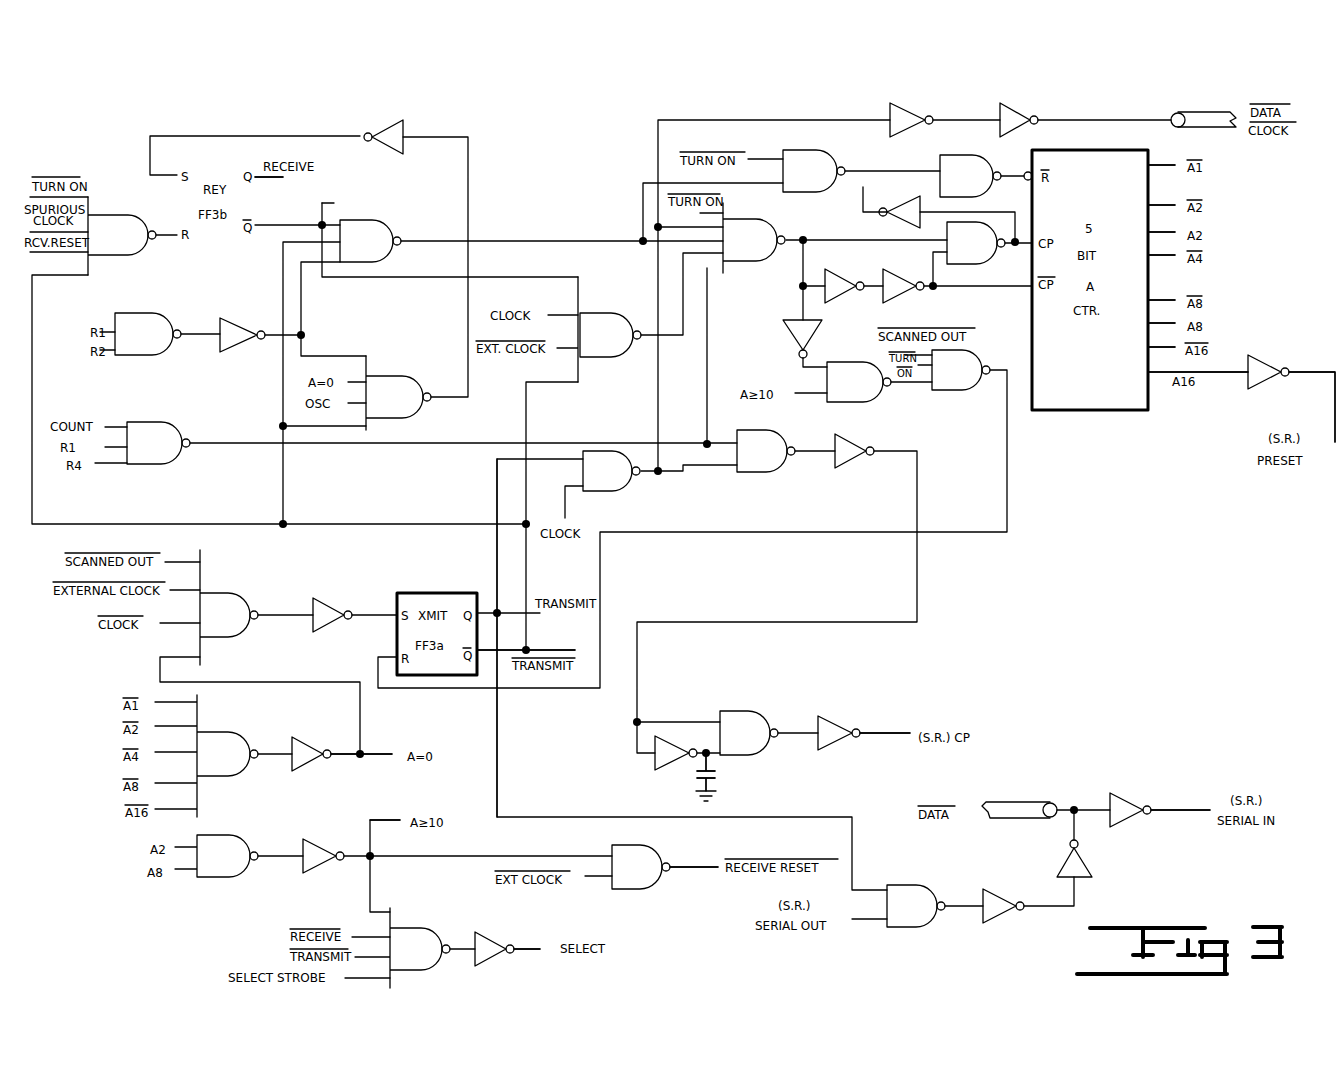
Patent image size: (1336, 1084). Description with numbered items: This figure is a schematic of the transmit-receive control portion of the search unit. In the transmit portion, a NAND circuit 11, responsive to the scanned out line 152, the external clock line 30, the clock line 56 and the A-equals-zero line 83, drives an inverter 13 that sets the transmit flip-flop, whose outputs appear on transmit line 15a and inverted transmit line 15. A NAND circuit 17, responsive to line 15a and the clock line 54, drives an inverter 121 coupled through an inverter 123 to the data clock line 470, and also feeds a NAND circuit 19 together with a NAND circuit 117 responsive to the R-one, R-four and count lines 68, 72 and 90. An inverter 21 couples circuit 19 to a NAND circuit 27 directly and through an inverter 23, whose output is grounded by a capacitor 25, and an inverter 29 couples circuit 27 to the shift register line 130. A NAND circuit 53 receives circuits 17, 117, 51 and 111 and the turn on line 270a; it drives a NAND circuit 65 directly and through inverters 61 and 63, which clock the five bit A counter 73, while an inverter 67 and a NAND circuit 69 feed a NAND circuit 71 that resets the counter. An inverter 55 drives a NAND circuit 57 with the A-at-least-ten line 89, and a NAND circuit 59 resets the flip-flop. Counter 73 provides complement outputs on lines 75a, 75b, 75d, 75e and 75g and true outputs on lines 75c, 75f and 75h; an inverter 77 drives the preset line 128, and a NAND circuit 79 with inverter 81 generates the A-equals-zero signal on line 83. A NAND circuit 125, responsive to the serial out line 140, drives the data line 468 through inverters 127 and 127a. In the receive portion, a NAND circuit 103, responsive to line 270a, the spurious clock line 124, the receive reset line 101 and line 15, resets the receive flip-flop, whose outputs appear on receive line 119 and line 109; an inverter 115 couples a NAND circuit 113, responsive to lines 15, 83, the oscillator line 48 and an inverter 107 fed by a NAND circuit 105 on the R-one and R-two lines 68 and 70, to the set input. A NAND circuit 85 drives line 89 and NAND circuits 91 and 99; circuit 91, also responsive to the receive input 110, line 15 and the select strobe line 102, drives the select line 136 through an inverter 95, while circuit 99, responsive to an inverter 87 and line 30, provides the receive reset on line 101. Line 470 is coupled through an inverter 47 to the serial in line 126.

The NAND circuit 11 is at (250, 595).
The inverter 13 is at (330, 600).
The transmit line 15 is at (528, 650).
The transmit line 15a is at (497, 560).
The NAND circuit 17 is at (605, 451).
The NAND circuit 19 is at (775, 430).
The inverter 21 is at (855, 440).
The inverter 23 is at (668, 770).
The capacitor 25 is at (715, 778).
The NAND circuit 27 is at (752, 711).
The inverter 29 is at (838, 718).
The external clock line 30 is at (565, 350).
The inverter 47 is at (1130, 800).
The oscillator line 48 is at (360, 405).
The NAND circuit 51 is at (605, 313).
The NAND circuit 53 is at (760, 262).
The clock line 54 is at (570, 315).
The inverter 55 is at (815, 325).
The clock line 56 is at (160, 625).
The NAND circuit 57 is at (878, 400).
The NAND circuit 59 is at (960, 390).
The inverter 61 is at (840, 280).
The inverter 63 is at (892, 280).
The NAND circuit 65 is at (970, 264).
The inverter 67 is at (885, 222).
The R1 line 68 is at (103, 332).
The NAND circuit 69 is at (828, 160).
The R2 line 70 is at (105, 350).
The NAND circuit 71 is at (945, 160).
The R4 line 72 is at (97, 463).
The five bit A counter 73 is at (1082, 410).
The A1-bar line 75a is at (1148, 165).
The A2-bar line 75b is at (1148, 205).
The A2 line 75c is at (1148, 232).
The A4-bar line 75d is at (1148, 255).
The A8-bar line 75e is at (1148, 300).
The A8 line 75f is at (1148, 323).
The A16-bar line 75g is at (1148, 347).
The A16 line 75h is at (1148, 372).
The inverter 77 is at (1270, 360).
The NAND circuit 79 is at (235, 732).
The inverter 81 is at (312, 745).
The A=0 line 83 is at (355, 360).
The NAND circuit 85 is at (238, 835).
The inverter 87 is at (315, 840).
The A≥10 line 89 is at (810, 393).
The count line 90 is at (112, 427).
The NAND circuit 91 is at (430, 928).
The inverter 95 is at (490, 966).
The NAND circuit 99 is at (650, 889).
The receive reset line 101 is at (67, 262).
The select strobe line 102 is at (365, 978).
The NAND circuit 103 is at (125, 215).
The NAND circuit 105 is at (160, 313).
The inverter 107 is at (240, 320).
The line 109 is at (322, 203).
The receive line 110 is at (355, 937).
The NAND circuit 111 is at (385, 222).
The NAND circuit 113 is at (408, 376).
The inverter 115 is at (392, 154).
The NAND circuit 117 is at (175, 422).
The receive line 119 is at (278, 185).
The inverter 121 is at (910, 110).
The inverter 123 is at (1020, 112).
The spurious clock line 124 is at (88, 230).
The NAND circuit 125 is at (925, 885).
The serial in line 126 is at (1200, 810).
The inverter 127 is at (998, 896).
The inverter 127a is at (1085, 862).
The preset line 128 is at (1335, 400).
The shift register actuating line 130 is at (895, 733).
The select line 136 is at (538, 952).
The serial out line 140 is at (868, 920).
The scanned out line 152 is at (910, 355).
The turn on line 270a is at (83, 197).
The data connector 468 is at (1072, 805).
The data clock line 470 is at (1152, 118).